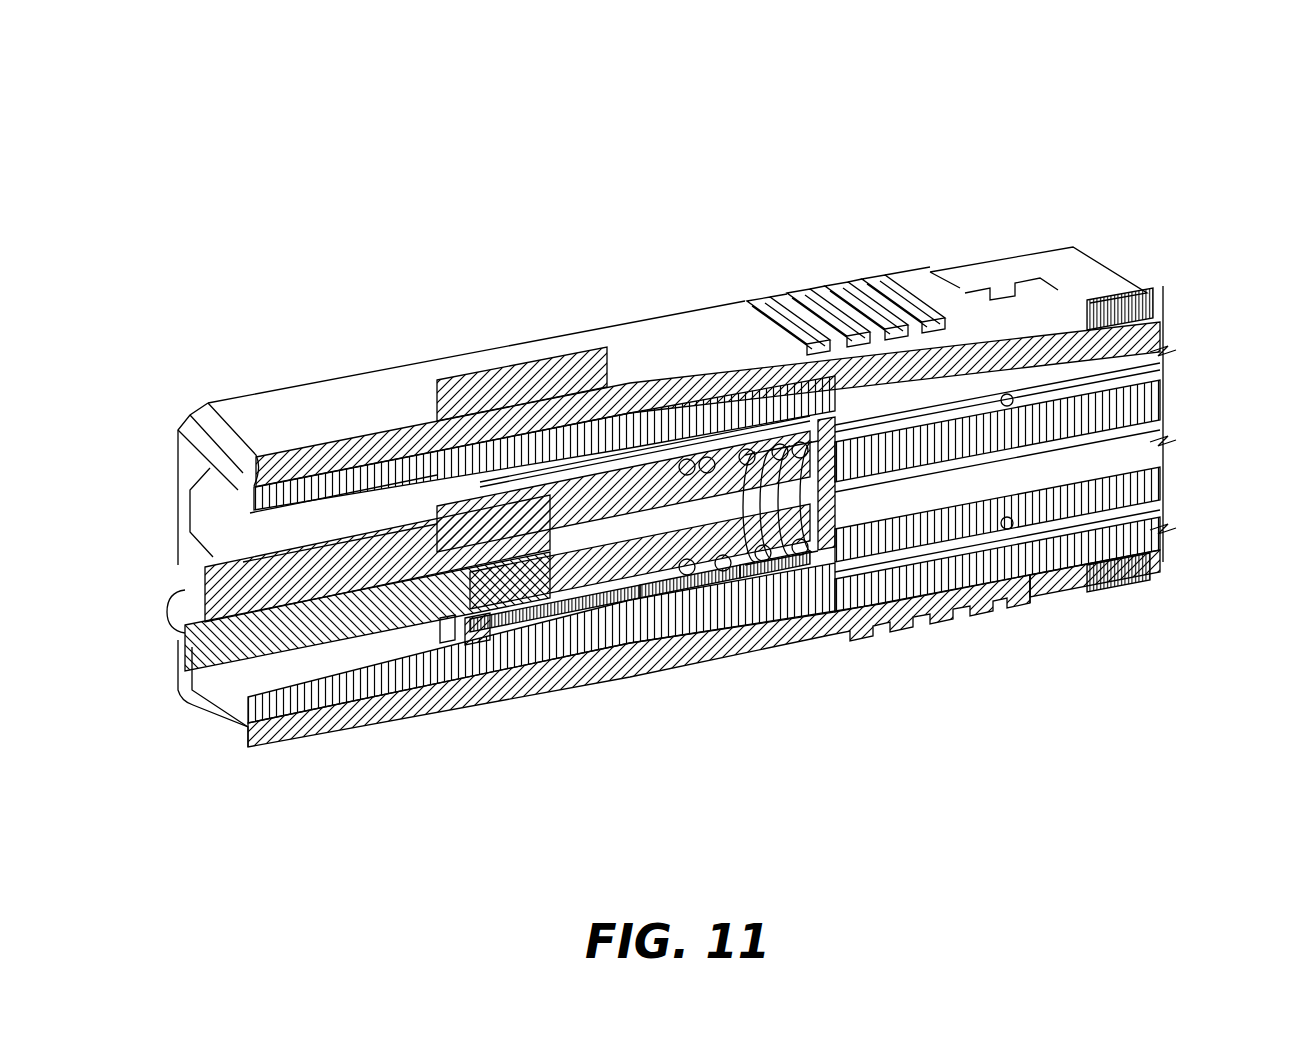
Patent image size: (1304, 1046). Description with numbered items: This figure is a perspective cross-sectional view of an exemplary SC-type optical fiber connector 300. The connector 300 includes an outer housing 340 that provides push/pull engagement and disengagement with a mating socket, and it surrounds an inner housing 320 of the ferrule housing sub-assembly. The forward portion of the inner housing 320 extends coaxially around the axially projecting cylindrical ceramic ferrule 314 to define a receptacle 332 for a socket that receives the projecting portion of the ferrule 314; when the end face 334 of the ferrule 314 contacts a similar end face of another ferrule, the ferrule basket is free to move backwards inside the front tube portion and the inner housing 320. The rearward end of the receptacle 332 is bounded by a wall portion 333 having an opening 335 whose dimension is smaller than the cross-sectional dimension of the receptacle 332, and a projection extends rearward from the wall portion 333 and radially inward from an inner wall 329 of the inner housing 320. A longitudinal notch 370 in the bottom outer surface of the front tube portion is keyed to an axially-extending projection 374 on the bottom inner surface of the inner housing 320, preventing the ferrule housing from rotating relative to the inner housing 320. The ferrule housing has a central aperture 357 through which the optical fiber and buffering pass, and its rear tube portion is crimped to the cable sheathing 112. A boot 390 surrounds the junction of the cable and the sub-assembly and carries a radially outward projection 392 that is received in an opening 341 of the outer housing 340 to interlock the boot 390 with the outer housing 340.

The optical fiber connector 300 is at (833, 143).
The outer housing 340 is at (377, 392).
The opening 341 is at (1011, 280).
The projection 392 is at (1088, 318).
The boot 390 is at (1150, 334).
The cable sheathing 112 is at (977, 517).
The wall portion 333 is at (453, 470).
The receptacle 332 is at (232, 542).
The end face 334 is at (182, 617).
The ferrule 314 is at (237, 648).
The opening 335 is at (447, 627).
The inner housing 320 is at (479, 640).
The projection 374 is at (660, 613).
The notch 370 is at (743, 605).
The inner wall 329 is at (799, 590).
The central aperture 357 is at (822, 523).